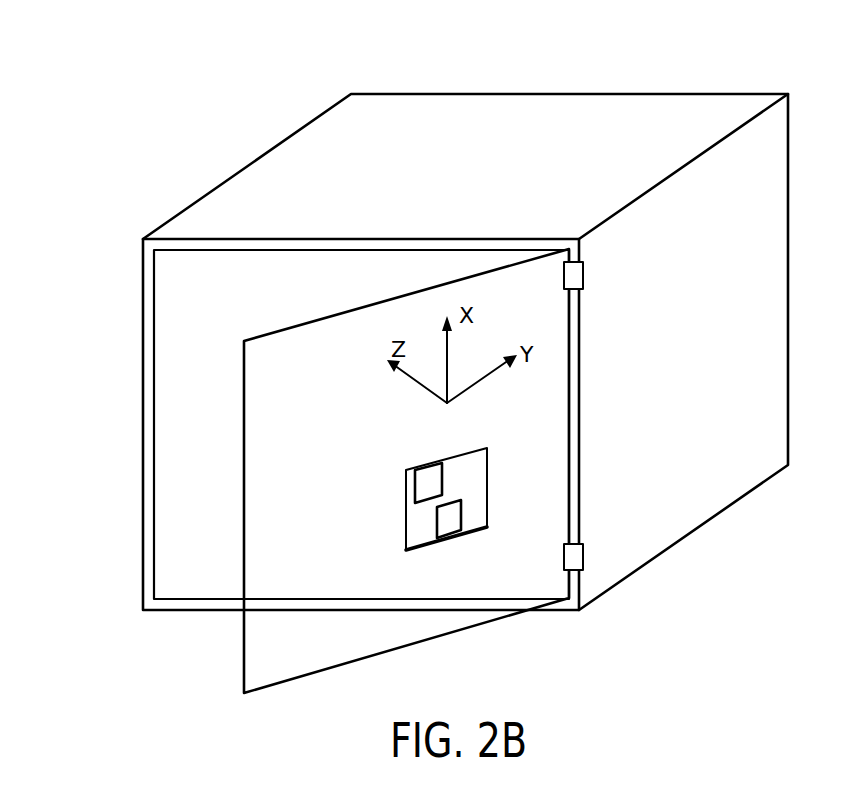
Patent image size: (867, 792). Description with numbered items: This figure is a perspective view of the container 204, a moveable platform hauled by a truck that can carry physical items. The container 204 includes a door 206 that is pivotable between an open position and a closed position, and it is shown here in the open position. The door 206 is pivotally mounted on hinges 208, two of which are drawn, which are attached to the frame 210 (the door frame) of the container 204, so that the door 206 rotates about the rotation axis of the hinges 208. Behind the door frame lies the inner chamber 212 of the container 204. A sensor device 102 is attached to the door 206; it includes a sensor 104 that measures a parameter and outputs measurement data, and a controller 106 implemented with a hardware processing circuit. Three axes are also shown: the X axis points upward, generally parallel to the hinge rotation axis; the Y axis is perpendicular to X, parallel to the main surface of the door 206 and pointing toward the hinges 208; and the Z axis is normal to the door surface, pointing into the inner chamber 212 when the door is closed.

The container 204 is at (505, 110).
The door 206 is at (290, 348).
The hinges 208 is at (584, 277).
The frame 210 is at (147, 282).
The inner chamber 212 is at (185, 450).
The sensor device 102 is at (447, 460).
The sensor 104 is at (415, 487).
The controller 106 is at (436, 518).